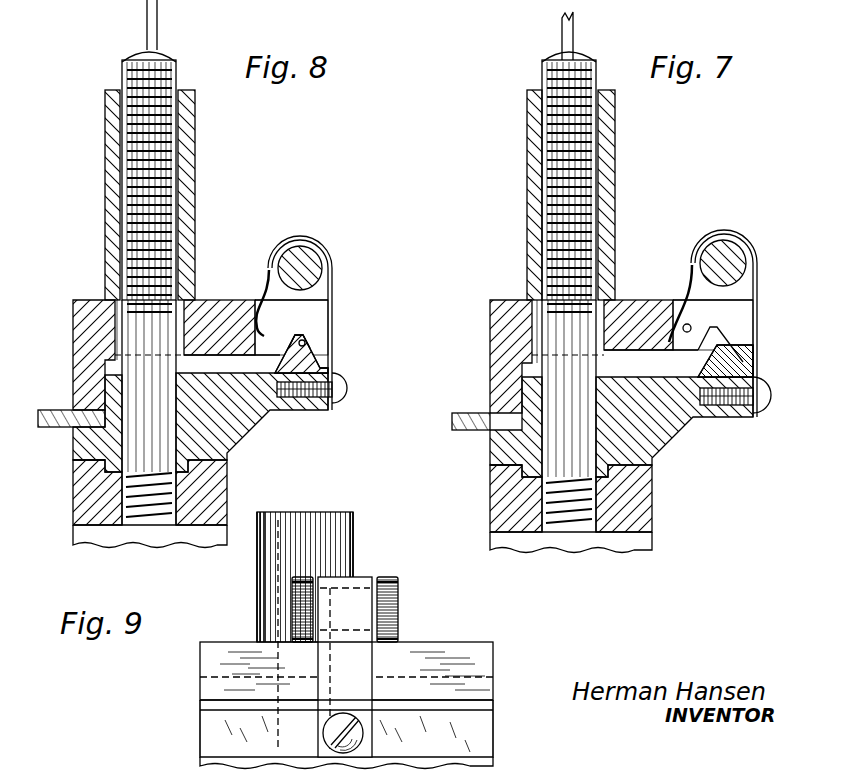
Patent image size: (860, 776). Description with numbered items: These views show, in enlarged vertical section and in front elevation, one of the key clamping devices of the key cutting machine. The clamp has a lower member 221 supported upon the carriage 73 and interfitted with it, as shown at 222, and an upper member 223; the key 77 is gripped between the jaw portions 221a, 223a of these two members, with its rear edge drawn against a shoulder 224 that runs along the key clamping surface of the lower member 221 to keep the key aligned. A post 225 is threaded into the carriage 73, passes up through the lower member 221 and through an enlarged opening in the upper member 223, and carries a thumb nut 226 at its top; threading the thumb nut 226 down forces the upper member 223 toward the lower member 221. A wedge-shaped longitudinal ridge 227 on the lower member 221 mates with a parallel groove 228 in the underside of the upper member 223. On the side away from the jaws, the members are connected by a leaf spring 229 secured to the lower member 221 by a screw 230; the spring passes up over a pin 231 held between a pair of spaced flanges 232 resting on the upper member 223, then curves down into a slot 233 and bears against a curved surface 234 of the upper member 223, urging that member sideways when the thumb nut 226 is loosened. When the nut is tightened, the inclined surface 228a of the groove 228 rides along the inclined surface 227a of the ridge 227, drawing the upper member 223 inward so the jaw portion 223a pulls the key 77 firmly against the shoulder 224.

In FIG. 8, the carriage 73 is at (110, 536).
In FIG. 7, the carriage 73 is at (648, 503).
In FIG. 8, the key 77 is at (58, 428).
In FIG. 7, the key 77 is at (470, 431).
In FIG. 8, the lower member 221 is at (174, 433).
In FIG. 7, the lower member 221 is at (591, 429).
In FIG. 9, the lower member 221 is at (208, 735).
In FIG. 8, the jaw portion 221a is at (87, 460).
In FIG. 7, the jaw portion 221a is at (498, 465).
In FIG. 8, the interfitting 222 is at (186, 478).
In FIG. 7, the interfitting 222 is at (602, 490).
In FIG. 8, the upper member 223 is at (174, 332).
In FIG. 7, the upper member 223 is at (596, 342).
In FIG. 9, the upper member 223 is at (261, 566).
In FIG. 8, the jaw portion 223a is at (82, 386).
In FIG. 7, the jaw portion 223a is at (498, 403).
In FIG. 8, the shoulder 224 is at (108, 472).
In FIG. 7, the shoulder 224 is at (512, 474).
In FIG. 8, the post 225 is at (136, 211).
In FIG. 7, the post 225 is at (588, 226).
In FIG. 8, the thumb nut 226 is at (106, 116).
In FIG. 7, the thumb nut 226 is at (613, 180).
In FIG. 8, the longitudinal ridge 227 is at (358, 363).
In FIG. 7, the longitudinal ridge 227 is at (758, 405).
In FIG. 9, the longitudinal ridge 227 is at (208, 700).
In FIG. 8, the inclined surface 227a is at (330, 373).
In FIG. 7, the inclined surface 227a is at (733, 410).
In FIG. 8, the longitudinally extending groove 228 is at (367, 337).
In FIG. 7, the longitudinally extending groove 228 is at (718, 328).
In FIG. 8, the inclined surface 228a is at (308, 344).
In FIG. 8, the leaf spring 229 is at (336, 293).
In FIG. 7, the leaf spring 229 is at (755, 340).
In FIG. 9, the leaf spring 229 is at (362, 580).
In FIG. 8, the screw 230 is at (346, 392).
In FIG. 7, the screw 230 is at (762, 412).
In FIG. 9, the screw 230 is at (366, 736).
In FIG. 8, the pin 231 is at (324, 260).
In FIG. 7, the pin 231 is at (738, 248).
In FIG. 8, the spaced flanges 232 is at (308, 246).
In FIG. 7, the spaced flanges 232 is at (716, 240).
In FIG. 9, the spaced flanges 232 is at (302, 616).
In FIG. 8, the slot 233 is at (312, 322).
In FIG. 7, the slot 233 is at (737, 315).
In FIG. 9, the slot 233 is at (378, 664).
In FIG. 8, the curved surface 234 is at (266, 266).
In FIG. 7, the curved surface 234 is at (672, 333).